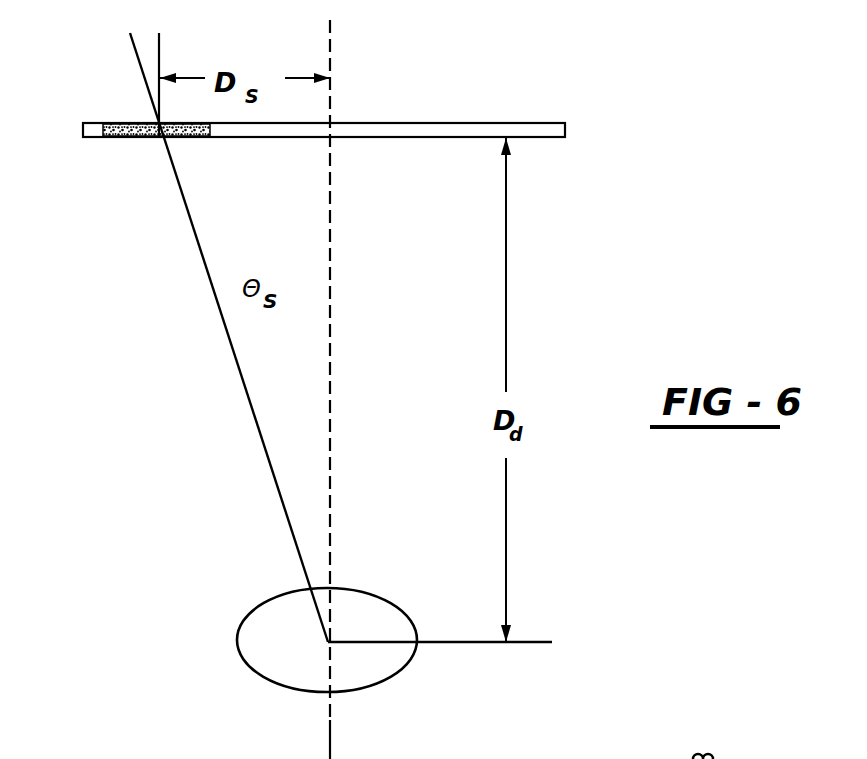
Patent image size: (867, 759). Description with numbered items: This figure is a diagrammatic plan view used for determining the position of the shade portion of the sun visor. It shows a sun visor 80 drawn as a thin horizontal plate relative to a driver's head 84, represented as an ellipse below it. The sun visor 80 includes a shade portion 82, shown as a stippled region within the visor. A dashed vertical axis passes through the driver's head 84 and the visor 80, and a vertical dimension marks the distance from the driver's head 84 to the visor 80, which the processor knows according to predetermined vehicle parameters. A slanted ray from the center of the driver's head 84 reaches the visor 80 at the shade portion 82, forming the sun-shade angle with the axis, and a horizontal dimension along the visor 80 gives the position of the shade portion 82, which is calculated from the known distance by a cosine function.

The sun visor 80 is at (437, 121).
The shade portion 82 is at (120, 122).
The driver's head 84 is at (362, 588).